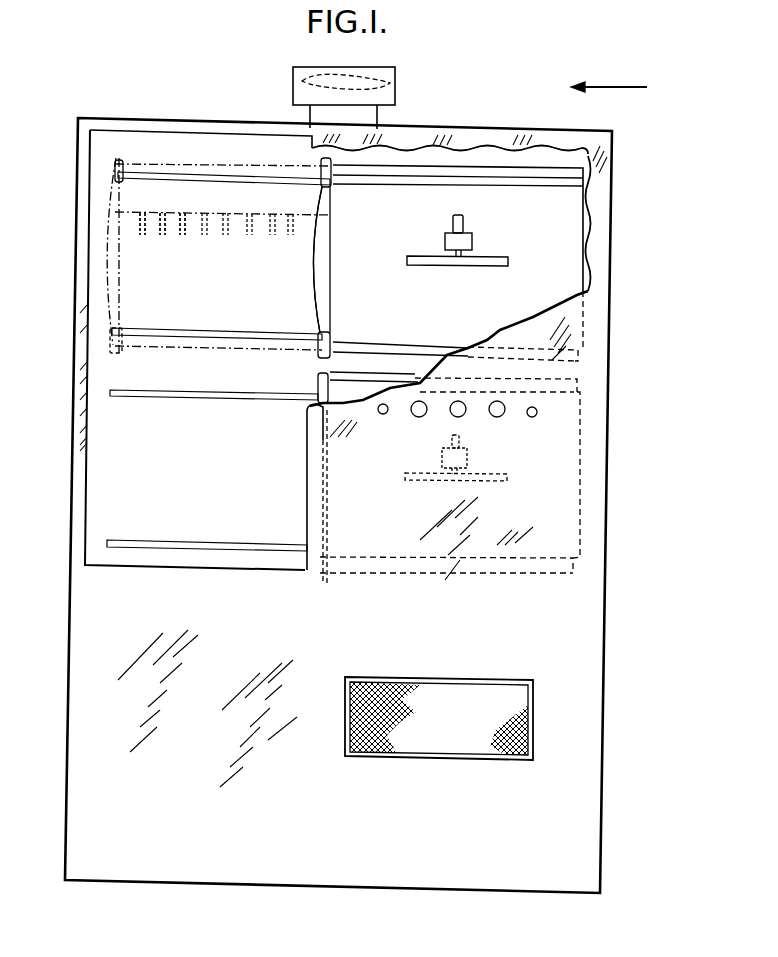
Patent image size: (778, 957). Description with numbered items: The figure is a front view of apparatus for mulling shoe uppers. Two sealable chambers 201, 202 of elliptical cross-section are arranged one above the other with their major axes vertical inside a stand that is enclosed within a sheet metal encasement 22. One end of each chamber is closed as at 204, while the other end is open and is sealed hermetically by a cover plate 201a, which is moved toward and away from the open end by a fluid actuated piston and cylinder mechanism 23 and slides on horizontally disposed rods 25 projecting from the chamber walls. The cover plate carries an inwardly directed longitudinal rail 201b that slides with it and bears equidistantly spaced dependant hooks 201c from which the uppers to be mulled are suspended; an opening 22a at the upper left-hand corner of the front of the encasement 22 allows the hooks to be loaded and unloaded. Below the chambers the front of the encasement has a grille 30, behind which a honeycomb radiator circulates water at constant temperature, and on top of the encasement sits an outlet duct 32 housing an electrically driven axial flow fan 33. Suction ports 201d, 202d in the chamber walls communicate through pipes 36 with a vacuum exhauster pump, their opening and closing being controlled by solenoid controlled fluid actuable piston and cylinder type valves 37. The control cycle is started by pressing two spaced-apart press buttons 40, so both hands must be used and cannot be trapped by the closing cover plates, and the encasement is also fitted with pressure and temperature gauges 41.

The sheet metal encasement 22 is at (612, 229).
The opening 22a is at (85, 475).
The fluid actuated piston and cylinder mechanism 23 is at (227, 165).
The horizontally disposed rod 25 is at (245, 181).
The grille 30 is at (450, 697).
The outlet duct 32 is at (310, 110).
The axial flow fan 33 is at (396, 78).
The pipe 36 is at (463, 223).
The solenoid controlled fluid actuable piston and cylinder type valve 37 is at (470, 239).
The press button 40 is at (380, 413).
The pressure and temperature gauge 41 is at (452, 414).
The sealable chamber 201 is at (407, 224).
The cover plate 201a is at (328, 245).
The longitudinal rail 201b is at (238, 212).
The dependant hook 201c is at (158, 216).
The suction port 201d is at (440, 264).
The sealable chamber 202 is at (318, 390).
The suction port 202d is at (405, 480).
The closed end 204 is at (588, 256).